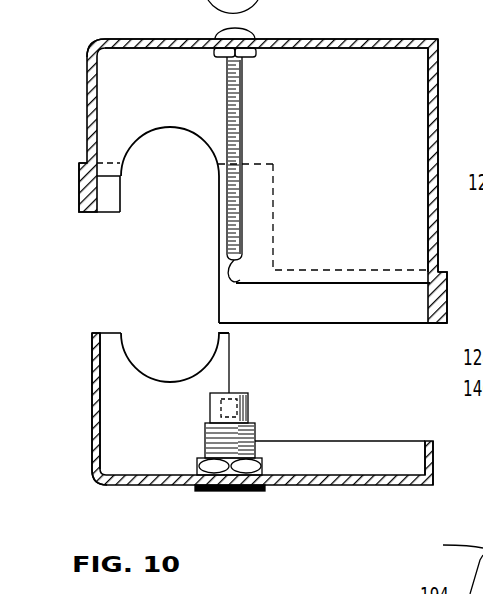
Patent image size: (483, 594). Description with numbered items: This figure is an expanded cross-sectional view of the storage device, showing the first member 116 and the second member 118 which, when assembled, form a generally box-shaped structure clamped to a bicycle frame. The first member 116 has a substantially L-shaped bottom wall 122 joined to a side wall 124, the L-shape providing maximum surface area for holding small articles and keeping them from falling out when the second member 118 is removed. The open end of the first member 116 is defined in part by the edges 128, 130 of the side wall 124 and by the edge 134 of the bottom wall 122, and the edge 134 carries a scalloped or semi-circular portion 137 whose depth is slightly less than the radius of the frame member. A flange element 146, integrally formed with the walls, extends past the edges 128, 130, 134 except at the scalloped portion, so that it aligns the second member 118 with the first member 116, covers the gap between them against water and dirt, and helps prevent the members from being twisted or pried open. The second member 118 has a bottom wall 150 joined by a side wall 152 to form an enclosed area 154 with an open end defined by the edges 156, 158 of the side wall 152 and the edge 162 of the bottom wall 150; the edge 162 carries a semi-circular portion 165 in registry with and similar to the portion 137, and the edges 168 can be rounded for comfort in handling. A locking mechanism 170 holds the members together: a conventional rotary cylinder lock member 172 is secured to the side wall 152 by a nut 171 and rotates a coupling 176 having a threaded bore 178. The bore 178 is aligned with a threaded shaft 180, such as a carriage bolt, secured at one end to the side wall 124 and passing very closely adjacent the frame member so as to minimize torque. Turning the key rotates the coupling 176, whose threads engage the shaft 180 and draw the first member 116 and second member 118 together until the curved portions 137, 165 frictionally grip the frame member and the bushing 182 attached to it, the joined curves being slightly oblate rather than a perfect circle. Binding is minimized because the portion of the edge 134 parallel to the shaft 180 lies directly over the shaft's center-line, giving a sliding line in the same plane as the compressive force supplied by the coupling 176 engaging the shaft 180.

The first member 116 is at (252, 161).
The second member 118 is at (255, 284).
The bottom wall 122 is at (392, 63).
The side wall 124 is at (439, 153).
The edge 128 is at (97, 180).
The edge 130 is at (430, 286).
The edge 134 is at (240, 277).
The semi-circular portion 137 is at (150, 139).
The flange element 146 is at (79, 190).
The bottom wall 150 is at (350, 452).
The side wall 152 is at (92, 391).
The enclosed area 154 is at (125, 441).
The edge 156 is at (96, 330).
The edge 158 is at (433, 443).
The edge 162 is at (219, 328).
The semi-circular portion 165 is at (135, 358).
The edges 168 is at (95, 482).
The locking mechanism 170 is at (235, 492).
The nut 171 is at (262, 467).
The rotary cylinder lock member 172 is at (250, 433).
The coupling 176 is at (248, 409).
The threaded bore 178 is at (210, 403).
The threaded shaft 180 is at (238, 183).
The bushing 182 is at (446, 545).